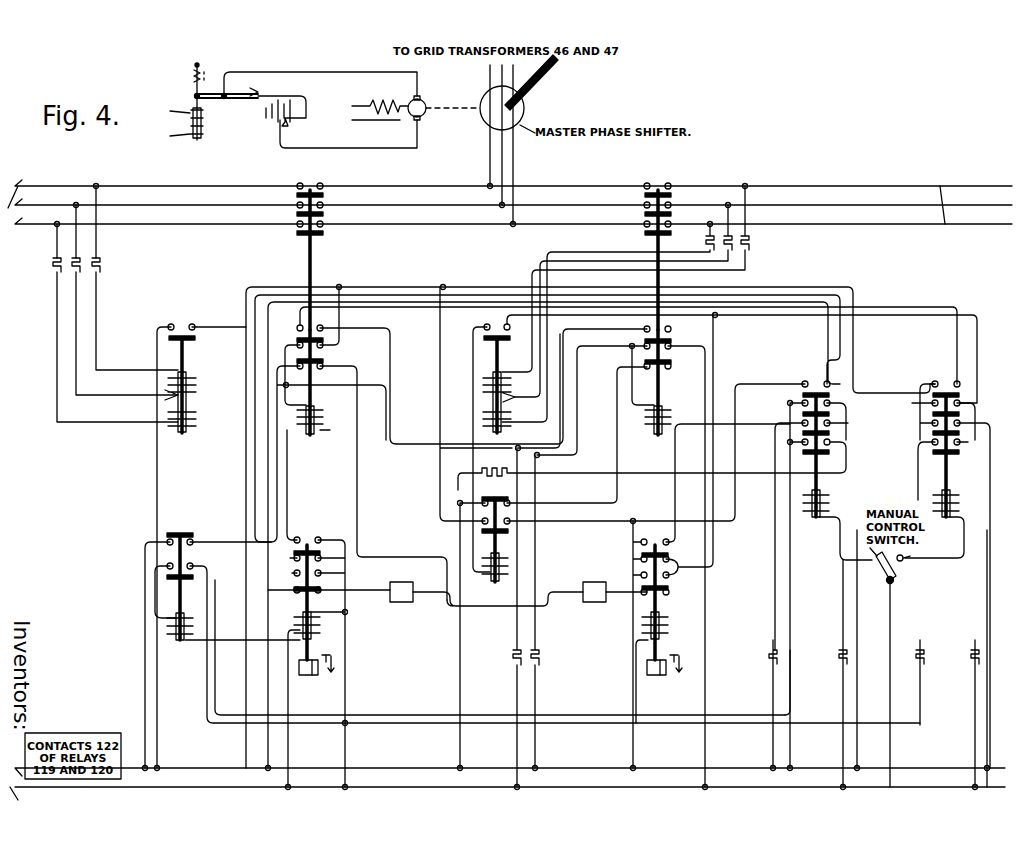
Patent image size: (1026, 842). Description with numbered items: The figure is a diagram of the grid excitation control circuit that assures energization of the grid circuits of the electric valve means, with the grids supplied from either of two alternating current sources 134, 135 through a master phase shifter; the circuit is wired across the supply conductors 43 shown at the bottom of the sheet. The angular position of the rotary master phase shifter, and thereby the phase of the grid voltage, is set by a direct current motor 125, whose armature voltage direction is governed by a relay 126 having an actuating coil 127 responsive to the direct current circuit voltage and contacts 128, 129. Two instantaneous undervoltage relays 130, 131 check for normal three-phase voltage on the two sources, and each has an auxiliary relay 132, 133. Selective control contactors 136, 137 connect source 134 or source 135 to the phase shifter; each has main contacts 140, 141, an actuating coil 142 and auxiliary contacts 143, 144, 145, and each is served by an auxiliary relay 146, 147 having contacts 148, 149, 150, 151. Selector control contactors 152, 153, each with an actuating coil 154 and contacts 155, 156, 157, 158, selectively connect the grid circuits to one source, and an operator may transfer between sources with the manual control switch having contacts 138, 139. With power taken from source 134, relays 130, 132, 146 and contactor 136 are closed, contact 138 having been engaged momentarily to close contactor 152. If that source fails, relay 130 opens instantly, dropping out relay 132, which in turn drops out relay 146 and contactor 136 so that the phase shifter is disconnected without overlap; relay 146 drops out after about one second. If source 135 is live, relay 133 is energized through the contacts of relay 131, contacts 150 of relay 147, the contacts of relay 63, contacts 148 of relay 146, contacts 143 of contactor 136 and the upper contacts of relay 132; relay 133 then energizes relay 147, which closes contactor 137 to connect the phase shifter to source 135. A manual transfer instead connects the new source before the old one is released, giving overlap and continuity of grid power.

The supply conductors 43 is at (507, 791).
The relay 63 is at (503, 595).
The direct current motor 125 is at (444, 101).
The relay 126 is at (227, 107).
The actuating coil 127 is at (190, 124).
The contact 128 is at (241, 82).
The contact 129 is at (282, 103).
The instantaneous undervoltage relay 130 is at (220, 404).
The instantaneous undervoltage relay 131 is at (530, 368).
The auxiliary relay 132 is at (179, 601).
The auxiliary relay 133 is at (488, 560).
The alternating current source 134 is at (506, 202).
The alternating current source 135 is at (943, 195).
The selective control contactor 136 is at (312, 266).
The selective control contactor 137 is at (662, 278).
The manual control switch contact 138 is at (877, 667).
The manual control switch contact 139 is at (909, 571).
The main contacts 140 is at (324, 216).
The main contacts 141 is at (645, 217).
The actuating coil 142 is at (317, 414).
The auxiliary contacts 143 is at (498, 374).
The auxiliary contacts 144 is at (672, 328).
The auxiliary contacts 145 is at (296, 344).
The auxiliary relay 146 is at (319, 610).
The auxiliary relay 147 is at (667, 607).
The contacts 148 is at (296, 593).
The contacts 149 is at (294, 574).
The contacts 150 is at (294, 557).
The contacts 151 is at (318, 531).
The selector control contactor 152 is at (832, 540).
The selector control contactor 153 is at (992, 473).
The actuating coil 154 is at (825, 495).
The contacts 155 is at (830, 446).
The contacts 156 is at (830, 426).
The contacts 157 is at (830, 405).
The contacts 158 is at (876, 376).